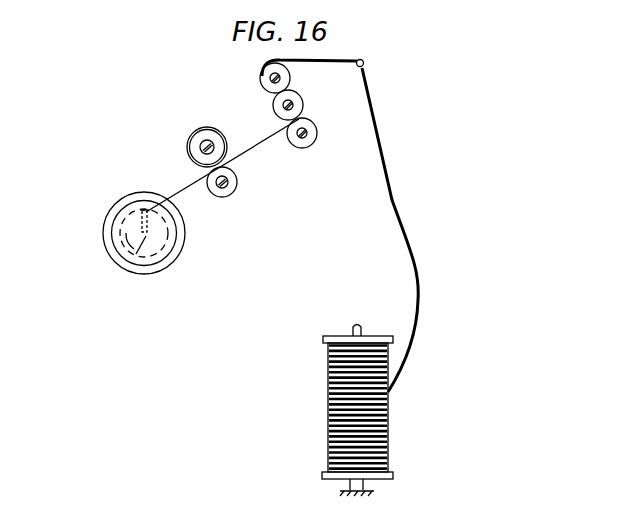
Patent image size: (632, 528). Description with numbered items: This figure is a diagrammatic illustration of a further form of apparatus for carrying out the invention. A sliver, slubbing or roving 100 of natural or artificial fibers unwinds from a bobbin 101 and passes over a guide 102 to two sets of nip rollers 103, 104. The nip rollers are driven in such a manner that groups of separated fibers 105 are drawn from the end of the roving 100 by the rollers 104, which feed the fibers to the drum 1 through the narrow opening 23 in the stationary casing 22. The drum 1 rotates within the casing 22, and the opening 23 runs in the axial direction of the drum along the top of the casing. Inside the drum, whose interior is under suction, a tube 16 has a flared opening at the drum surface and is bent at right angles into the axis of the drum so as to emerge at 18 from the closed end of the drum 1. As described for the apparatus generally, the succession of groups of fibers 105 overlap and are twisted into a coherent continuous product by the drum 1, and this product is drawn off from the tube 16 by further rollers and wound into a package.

The drum 1 is at (172, 268).
The tube 16 is at (104, 250).
The emergence point of tube 18 is at (122, 273).
The stationary casing 22 is at (121, 213).
The narrow opening 23 is at (149, 206).
The roving 100 is at (420, 283).
The bobbin 101 is at (373, 354).
The guide 102 is at (364, 65).
The nip rollers 103 is at (289, 82).
The nip rollers 104 is at (238, 165).
The groups of separated fibers 105 is at (196, 183).